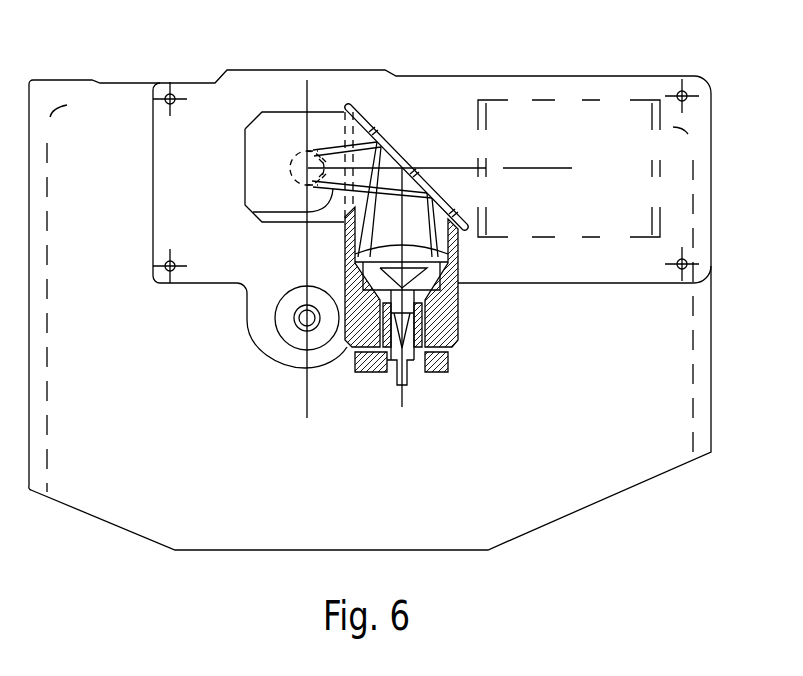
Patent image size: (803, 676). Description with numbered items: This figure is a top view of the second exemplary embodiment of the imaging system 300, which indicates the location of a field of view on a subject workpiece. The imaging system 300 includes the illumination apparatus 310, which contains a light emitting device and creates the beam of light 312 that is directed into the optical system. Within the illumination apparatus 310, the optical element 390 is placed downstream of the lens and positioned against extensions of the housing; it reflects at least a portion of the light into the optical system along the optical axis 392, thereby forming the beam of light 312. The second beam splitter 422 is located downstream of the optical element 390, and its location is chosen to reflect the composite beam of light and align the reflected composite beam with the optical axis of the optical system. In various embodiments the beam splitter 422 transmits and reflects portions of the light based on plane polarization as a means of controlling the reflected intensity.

The imaging system 300 is at (690, 54).
The illumination apparatus 310 is at (468, 344).
The beam of light 312 is at (253, 212).
The optical element 390 is at (399, 151).
The optical axis 392 is at (532, 166).
The second beam splitter 422 is at (255, 145).